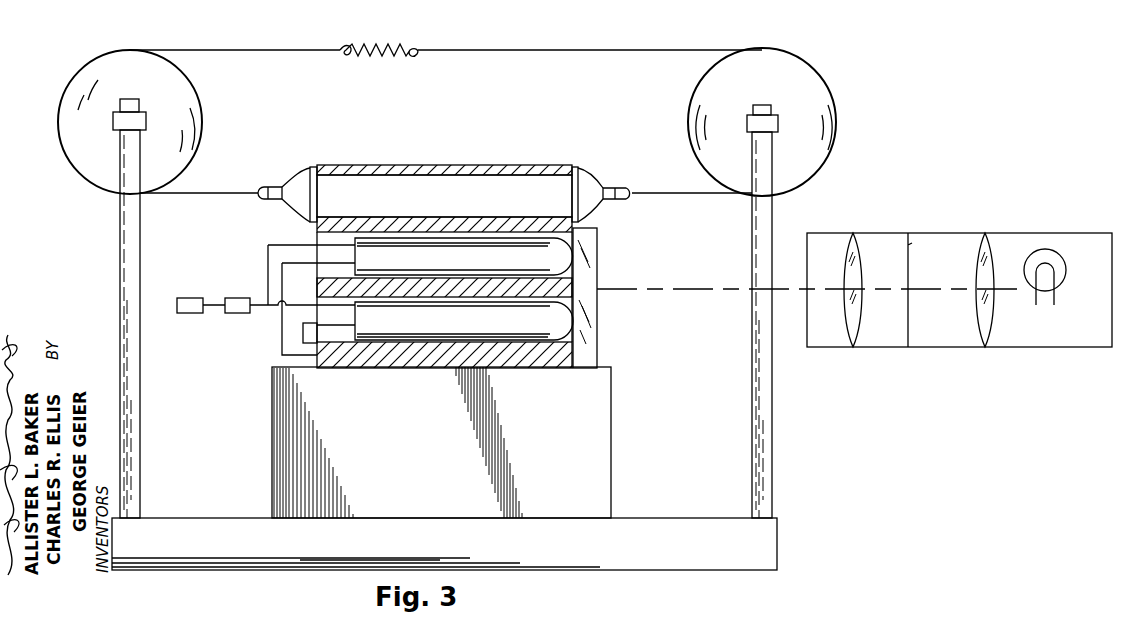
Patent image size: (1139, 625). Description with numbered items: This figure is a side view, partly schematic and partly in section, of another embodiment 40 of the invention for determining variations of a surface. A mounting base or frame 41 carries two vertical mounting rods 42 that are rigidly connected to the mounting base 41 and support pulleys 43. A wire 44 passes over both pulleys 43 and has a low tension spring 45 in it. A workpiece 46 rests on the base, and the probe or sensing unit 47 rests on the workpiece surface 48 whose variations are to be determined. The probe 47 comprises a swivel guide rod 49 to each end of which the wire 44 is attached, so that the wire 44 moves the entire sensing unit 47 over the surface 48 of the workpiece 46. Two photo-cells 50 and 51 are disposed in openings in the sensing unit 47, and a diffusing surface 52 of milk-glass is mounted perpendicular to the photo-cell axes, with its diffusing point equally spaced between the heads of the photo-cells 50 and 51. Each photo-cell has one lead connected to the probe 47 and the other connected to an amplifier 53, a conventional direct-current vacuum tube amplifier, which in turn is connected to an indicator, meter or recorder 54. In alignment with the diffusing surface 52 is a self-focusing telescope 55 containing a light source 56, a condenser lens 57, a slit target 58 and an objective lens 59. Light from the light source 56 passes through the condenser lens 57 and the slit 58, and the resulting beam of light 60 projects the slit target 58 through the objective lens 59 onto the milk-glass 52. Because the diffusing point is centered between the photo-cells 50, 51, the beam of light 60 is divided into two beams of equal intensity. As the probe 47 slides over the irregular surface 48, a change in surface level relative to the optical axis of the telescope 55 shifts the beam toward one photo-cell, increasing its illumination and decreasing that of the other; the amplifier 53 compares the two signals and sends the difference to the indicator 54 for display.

The embodiment 40 is at (781, 558).
The mounting base 41 is at (770, 532).
The vertical mounting rods 42 is at (125, 230).
The pulleys 43 is at (173, 69).
The wire 44 is at (190, 193).
The low tension spring 45 is at (372, 46).
The workpiece 46 is at (600, 405).
The probe or sensing unit 47 is at (371, 163).
The workpiece surface 48 is at (300, 362).
The swivel guide rod 49 is at (300, 190).
The photo-cell 50 is at (425, 262).
The photo-cell 51 is at (423, 322).
The diffusing surface 52 is at (587, 242).
The amplifier 53 is at (242, 300).
The indicator 54 is at (178, 306).
The self-focusing telescope 55 is at (878, 232).
The light source 56 is at (1045, 250).
The condenser lens 57 is at (985, 333).
The slit target 58 is at (912, 243).
The objective lens 59 is at (856, 333).
The beam of light 60 is at (706, 292).